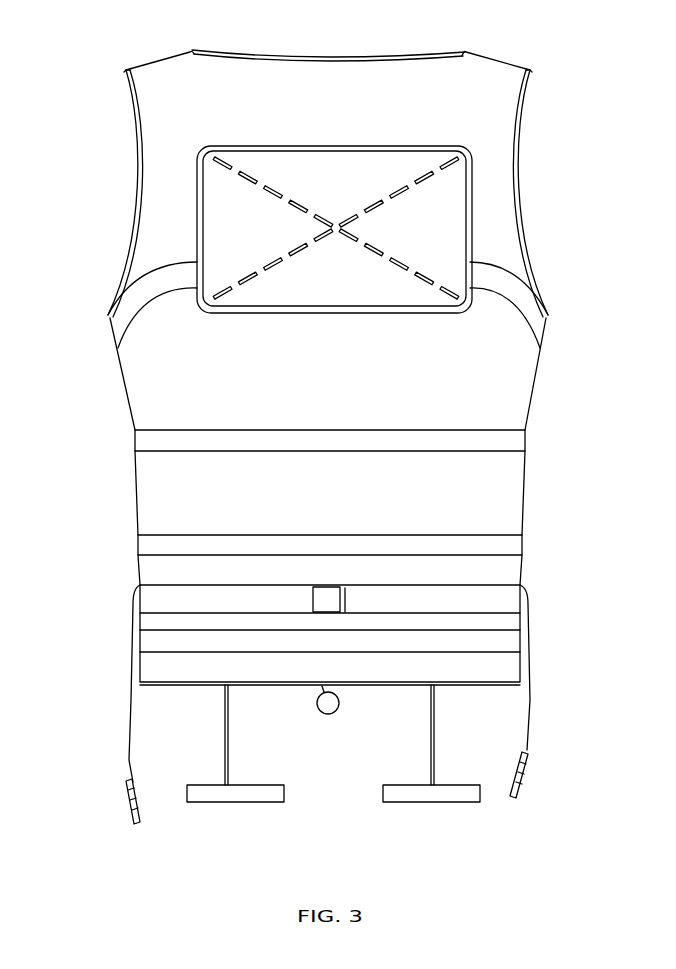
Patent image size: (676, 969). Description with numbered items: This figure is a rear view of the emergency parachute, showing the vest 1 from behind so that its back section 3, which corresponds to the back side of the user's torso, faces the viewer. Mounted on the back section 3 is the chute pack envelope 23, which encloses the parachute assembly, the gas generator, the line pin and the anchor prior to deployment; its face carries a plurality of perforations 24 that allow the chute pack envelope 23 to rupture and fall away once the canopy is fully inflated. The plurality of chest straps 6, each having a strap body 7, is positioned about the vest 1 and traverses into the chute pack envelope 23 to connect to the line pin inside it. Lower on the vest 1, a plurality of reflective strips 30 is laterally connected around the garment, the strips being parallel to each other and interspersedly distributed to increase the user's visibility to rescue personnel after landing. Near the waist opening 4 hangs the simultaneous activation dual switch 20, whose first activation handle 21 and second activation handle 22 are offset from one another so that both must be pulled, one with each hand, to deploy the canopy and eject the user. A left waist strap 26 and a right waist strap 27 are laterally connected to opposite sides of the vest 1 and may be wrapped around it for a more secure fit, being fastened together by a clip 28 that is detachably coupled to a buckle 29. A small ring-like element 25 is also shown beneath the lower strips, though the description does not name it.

The vest 1 is at (100, 44).
The back section 3 is at (336, 381).
The waist opening 4 is at (288, 695).
The plurality of chest straps 6 is at (160, 320).
The strap body 7 is at (170, 280).
The simultaneous activation dual switch 20 is at (460, 814).
The first activation handle 21 is at (420, 802).
The second activation handle 22 is at (222, 802).
The chute pack envelope 23 is at (344, 134).
The plurality of perforations 24 is at (372, 205).
The ring 25 is at (340, 704).
The left waist strap 26 is at (128, 740).
The right waist strap 27 is at (532, 727).
The clip 28 is at (128, 807).
The buckle 29 is at (523, 778).
The plurality of reflective strips 30 is at (405, 440).